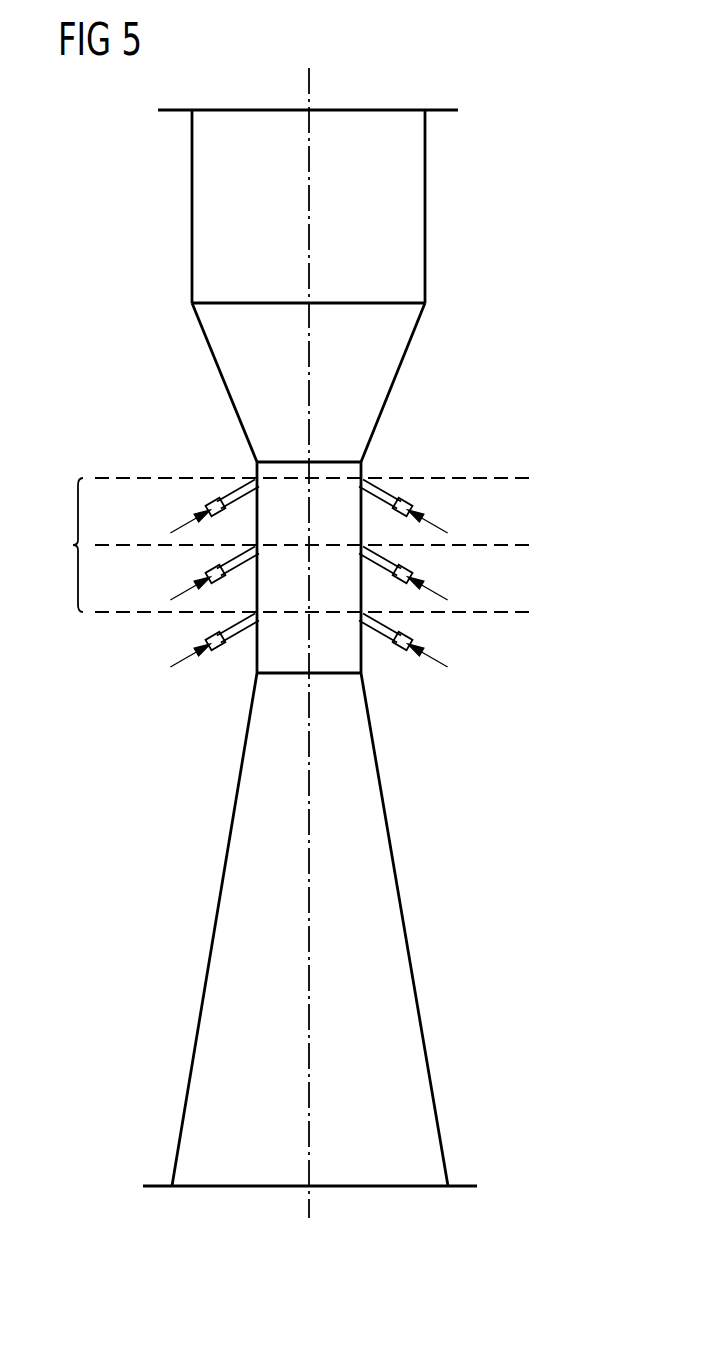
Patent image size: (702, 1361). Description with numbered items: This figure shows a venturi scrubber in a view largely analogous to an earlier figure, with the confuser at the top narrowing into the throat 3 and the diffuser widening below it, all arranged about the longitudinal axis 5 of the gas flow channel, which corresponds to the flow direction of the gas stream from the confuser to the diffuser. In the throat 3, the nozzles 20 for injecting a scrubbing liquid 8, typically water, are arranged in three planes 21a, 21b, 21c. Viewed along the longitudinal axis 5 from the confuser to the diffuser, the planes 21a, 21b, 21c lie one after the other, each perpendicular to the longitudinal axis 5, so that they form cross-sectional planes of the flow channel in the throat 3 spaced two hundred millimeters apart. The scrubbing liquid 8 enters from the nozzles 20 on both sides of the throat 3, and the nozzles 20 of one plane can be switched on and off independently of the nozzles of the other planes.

The throat 3 is at (69, 545).
The longitudinal axis 5 is at (309, 79).
The scrubbing liquid 8 is at (172, 526).
The nozzles 20 is at (219, 497).
The first plane 21a is at (530, 478).
The second plane 21b is at (530, 545).
The third plane 21c is at (530, 612).